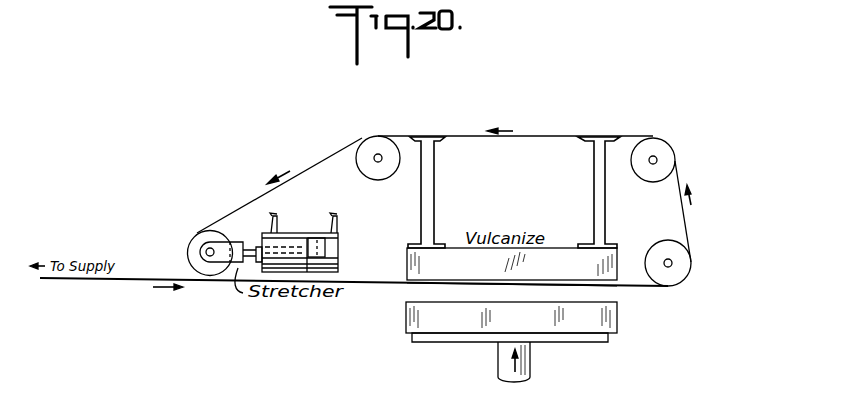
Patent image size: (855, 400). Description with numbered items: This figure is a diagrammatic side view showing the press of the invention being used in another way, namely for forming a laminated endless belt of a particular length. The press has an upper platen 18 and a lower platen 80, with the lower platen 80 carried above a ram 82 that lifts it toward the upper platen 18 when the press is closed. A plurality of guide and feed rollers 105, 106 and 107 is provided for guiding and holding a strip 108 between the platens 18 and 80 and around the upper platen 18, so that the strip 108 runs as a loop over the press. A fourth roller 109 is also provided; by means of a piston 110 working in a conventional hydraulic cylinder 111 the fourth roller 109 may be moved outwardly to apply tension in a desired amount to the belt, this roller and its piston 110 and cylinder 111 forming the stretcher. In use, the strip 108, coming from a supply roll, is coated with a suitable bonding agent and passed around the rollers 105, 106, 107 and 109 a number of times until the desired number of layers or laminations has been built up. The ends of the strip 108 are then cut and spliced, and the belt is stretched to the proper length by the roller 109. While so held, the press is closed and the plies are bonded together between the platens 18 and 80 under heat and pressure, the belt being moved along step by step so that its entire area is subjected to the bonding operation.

The upper platen 18 is at (617, 262).
The lower platen 80 is at (619, 328).
The piston / ram 82 is at (531, 368).
The guide and feed roller 105 is at (685, 266).
The guide and feed roller 106 is at (651, 148).
The guide and feed roller 107 is at (380, 146).
The strip 108 is at (135, 278).
The fourth roller 109 is at (198, 232).
The piston 110 is at (317, 240).
The hydraulic cylinder 111 is at (337, 252).